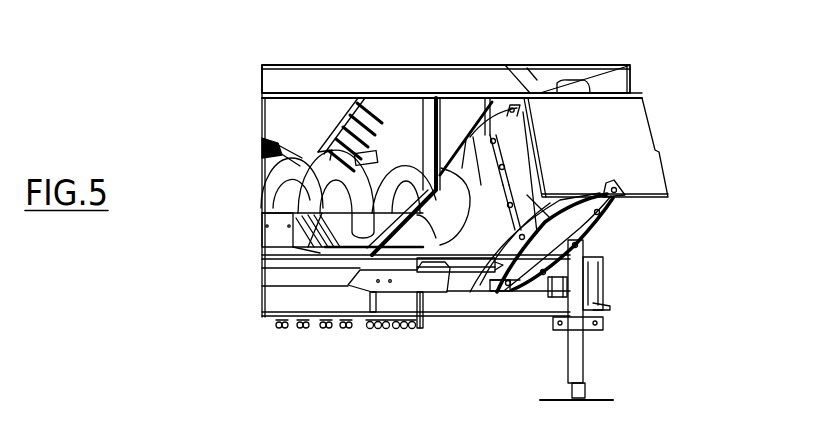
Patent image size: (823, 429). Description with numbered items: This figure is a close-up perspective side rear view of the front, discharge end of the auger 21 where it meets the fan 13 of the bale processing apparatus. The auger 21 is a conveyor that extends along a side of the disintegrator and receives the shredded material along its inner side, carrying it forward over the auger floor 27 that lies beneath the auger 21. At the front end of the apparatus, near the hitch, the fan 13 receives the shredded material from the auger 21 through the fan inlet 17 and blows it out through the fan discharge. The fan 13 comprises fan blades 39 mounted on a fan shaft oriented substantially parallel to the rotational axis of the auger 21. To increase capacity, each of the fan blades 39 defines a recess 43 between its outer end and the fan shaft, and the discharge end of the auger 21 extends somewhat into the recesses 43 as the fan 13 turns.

The fan 13 is at (605, 212).
The fan inlet 17 is at (610, 237).
The auger 21 is at (500, 245).
The auger floor 27 is at (467, 262).
The fan blades 39 is at (535, 225).
The recess 43 is at (465, 165).